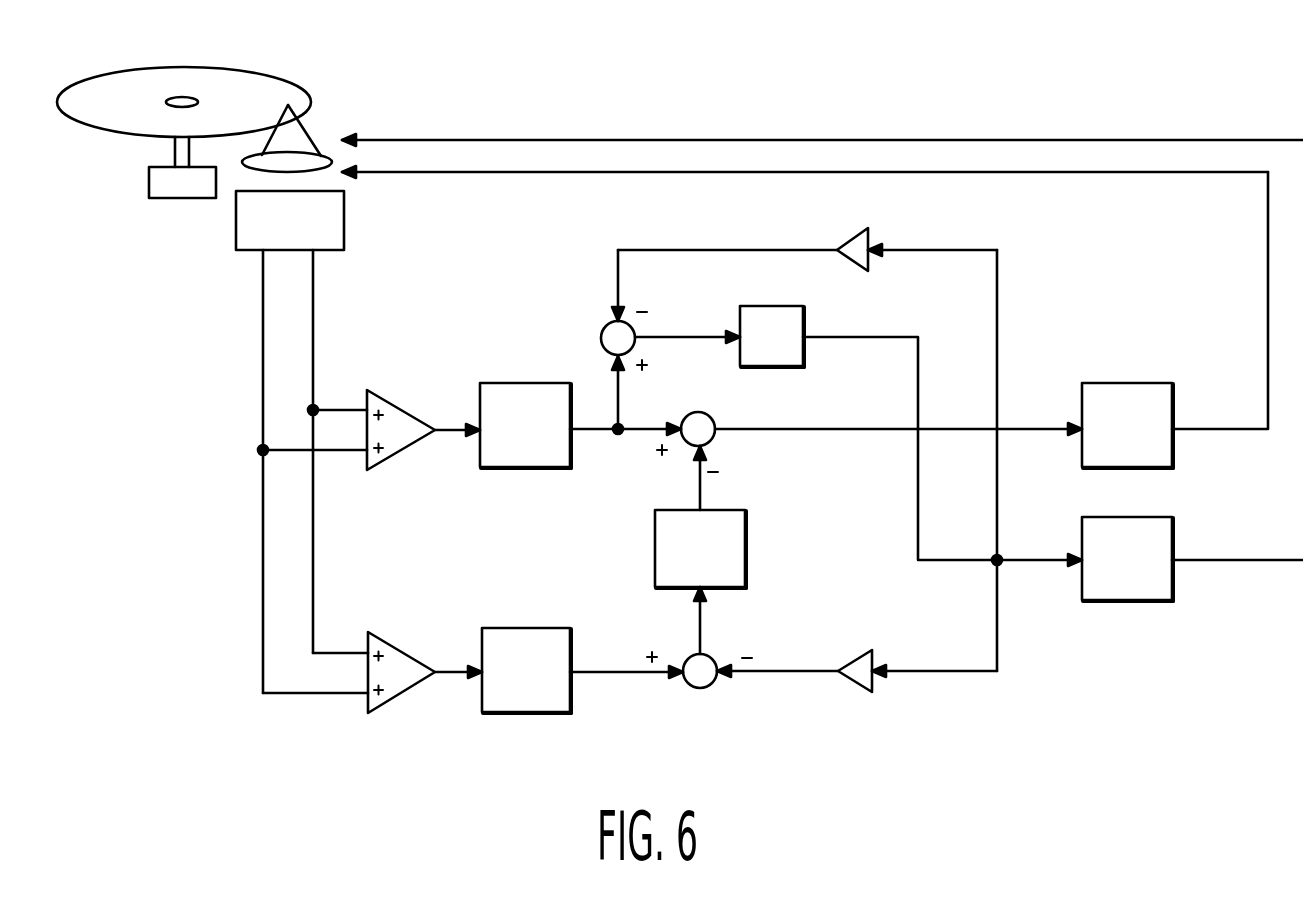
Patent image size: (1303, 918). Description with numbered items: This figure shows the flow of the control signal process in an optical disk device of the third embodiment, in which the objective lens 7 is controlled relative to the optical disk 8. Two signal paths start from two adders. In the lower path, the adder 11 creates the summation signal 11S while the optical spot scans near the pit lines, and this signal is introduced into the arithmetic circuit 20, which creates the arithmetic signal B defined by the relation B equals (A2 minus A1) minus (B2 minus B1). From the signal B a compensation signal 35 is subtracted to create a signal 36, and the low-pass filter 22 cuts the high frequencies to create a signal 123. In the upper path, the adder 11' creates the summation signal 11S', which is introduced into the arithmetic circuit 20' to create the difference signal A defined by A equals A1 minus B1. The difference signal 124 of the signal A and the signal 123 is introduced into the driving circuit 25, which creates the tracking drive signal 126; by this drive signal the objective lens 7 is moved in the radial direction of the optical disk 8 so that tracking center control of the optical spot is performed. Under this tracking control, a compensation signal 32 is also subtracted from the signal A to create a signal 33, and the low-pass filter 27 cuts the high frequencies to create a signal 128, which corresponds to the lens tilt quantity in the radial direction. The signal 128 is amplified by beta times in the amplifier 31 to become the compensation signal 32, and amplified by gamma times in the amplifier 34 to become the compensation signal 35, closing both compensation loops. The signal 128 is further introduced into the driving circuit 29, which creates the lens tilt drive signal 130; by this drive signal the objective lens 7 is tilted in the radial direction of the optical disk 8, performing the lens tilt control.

The optical disk 8 is at (288, 80).
The objective lens 7 is at (323, 155).
The adder 11' is at (401, 401).
The adder 11 is at (401, 649).
The summation signal 11S' is at (450, 472).
The summation signal 11S is at (453, 713).
The arithmetic circuit 20' is at (525, 390).
The arithmetic circuit 20 is at (526, 636).
The difference signal A is at (598, 433).
The arithmetic signal B is at (628, 675).
The compensation signal 32 is at (657, 248).
The signal 33 is at (667, 335).
The amplifier 31 is at (848, 242).
The amplifier 34 is at (860, 690).
The low-pass filter 27 is at (803, 320).
The low-pass filter 22 is at (733, 560).
The driving circuit 25 is at (1122, 392).
The driving circuit 29 is at (1127, 590).
The signal 123 is at (698, 490).
The difference signal 124 is at (825, 433).
The tracking drive signal 126 is at (1220, 428).
The signal 128 is at (943, 565).
The lens tilt drive signal 130 is at (1255, 563).
The signal 36 is at (702, 632).
The compensation signal 35 is at (785, 673).